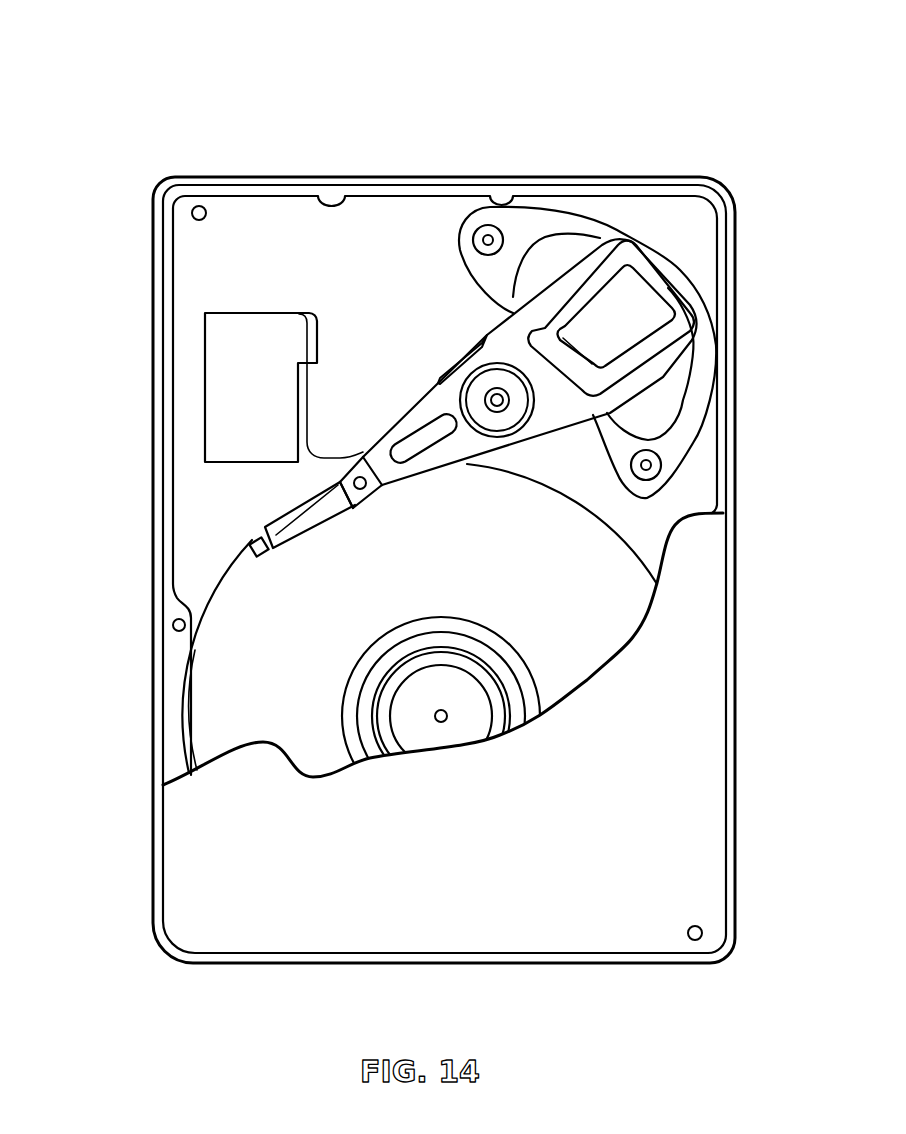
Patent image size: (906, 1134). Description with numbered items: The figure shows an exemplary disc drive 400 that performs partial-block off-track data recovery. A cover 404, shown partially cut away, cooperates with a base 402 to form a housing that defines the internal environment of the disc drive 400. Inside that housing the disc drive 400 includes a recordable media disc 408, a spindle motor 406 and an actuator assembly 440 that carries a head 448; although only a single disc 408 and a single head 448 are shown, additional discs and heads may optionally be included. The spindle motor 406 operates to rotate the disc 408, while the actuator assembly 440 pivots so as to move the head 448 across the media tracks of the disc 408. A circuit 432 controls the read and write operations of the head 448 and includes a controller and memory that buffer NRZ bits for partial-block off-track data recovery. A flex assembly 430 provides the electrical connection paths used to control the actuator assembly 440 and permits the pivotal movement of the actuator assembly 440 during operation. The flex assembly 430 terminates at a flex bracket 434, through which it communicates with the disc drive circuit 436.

The disc drive 400 is at (155, 103).
The base 402 is at (733, 583).
The cover 404 is at (443, 712).
The spindle motor 406 is at (447, 722).
The recordable media disc 408 is at (419, 618).
The flex assembly 430 is at (403, 405).
The circuit 432 is at (473, 347).
The flex bracket 434 is at (284, 387).
The disc drive circuit 436 is at (208, 567).
The actuator assembly 440 is at (460, 462).
The head 448 is at (258, 560).